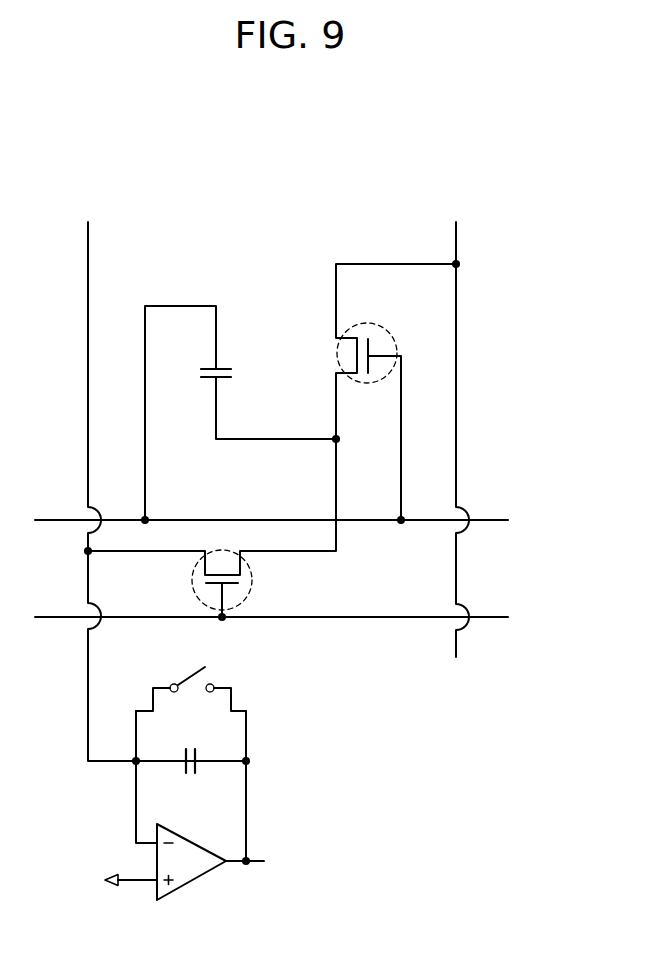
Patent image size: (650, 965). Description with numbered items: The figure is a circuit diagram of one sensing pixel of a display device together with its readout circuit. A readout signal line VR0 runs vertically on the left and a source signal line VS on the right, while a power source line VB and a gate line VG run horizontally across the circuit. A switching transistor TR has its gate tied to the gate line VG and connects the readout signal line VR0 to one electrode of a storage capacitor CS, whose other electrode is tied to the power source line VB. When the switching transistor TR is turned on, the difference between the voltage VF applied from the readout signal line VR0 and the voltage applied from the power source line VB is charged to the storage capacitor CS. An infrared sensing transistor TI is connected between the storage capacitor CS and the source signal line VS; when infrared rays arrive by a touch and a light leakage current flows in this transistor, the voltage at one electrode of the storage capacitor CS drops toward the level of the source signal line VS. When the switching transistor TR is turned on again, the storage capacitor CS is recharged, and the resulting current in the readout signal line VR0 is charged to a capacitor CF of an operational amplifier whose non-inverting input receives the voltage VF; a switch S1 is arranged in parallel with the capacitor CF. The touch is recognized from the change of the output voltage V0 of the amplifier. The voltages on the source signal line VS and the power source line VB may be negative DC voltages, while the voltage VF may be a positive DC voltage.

The readout signal line VR0 is at (160, 477).
The source signal line VS is at (456, 425).
The power source line VB is at (285, 520).
The gate voltage line VG is at (285, 617).
The storage capacitor CS is at (240, 413).
The input transistor TI is at (370, 325).
The switching transistor TR is at (253, 588).
The switch S1 is at (191, 694).
The capacitor CF is at (191, 786).
The voltage V0 is at (258, 861).
The voltage VF is at (116, 880).